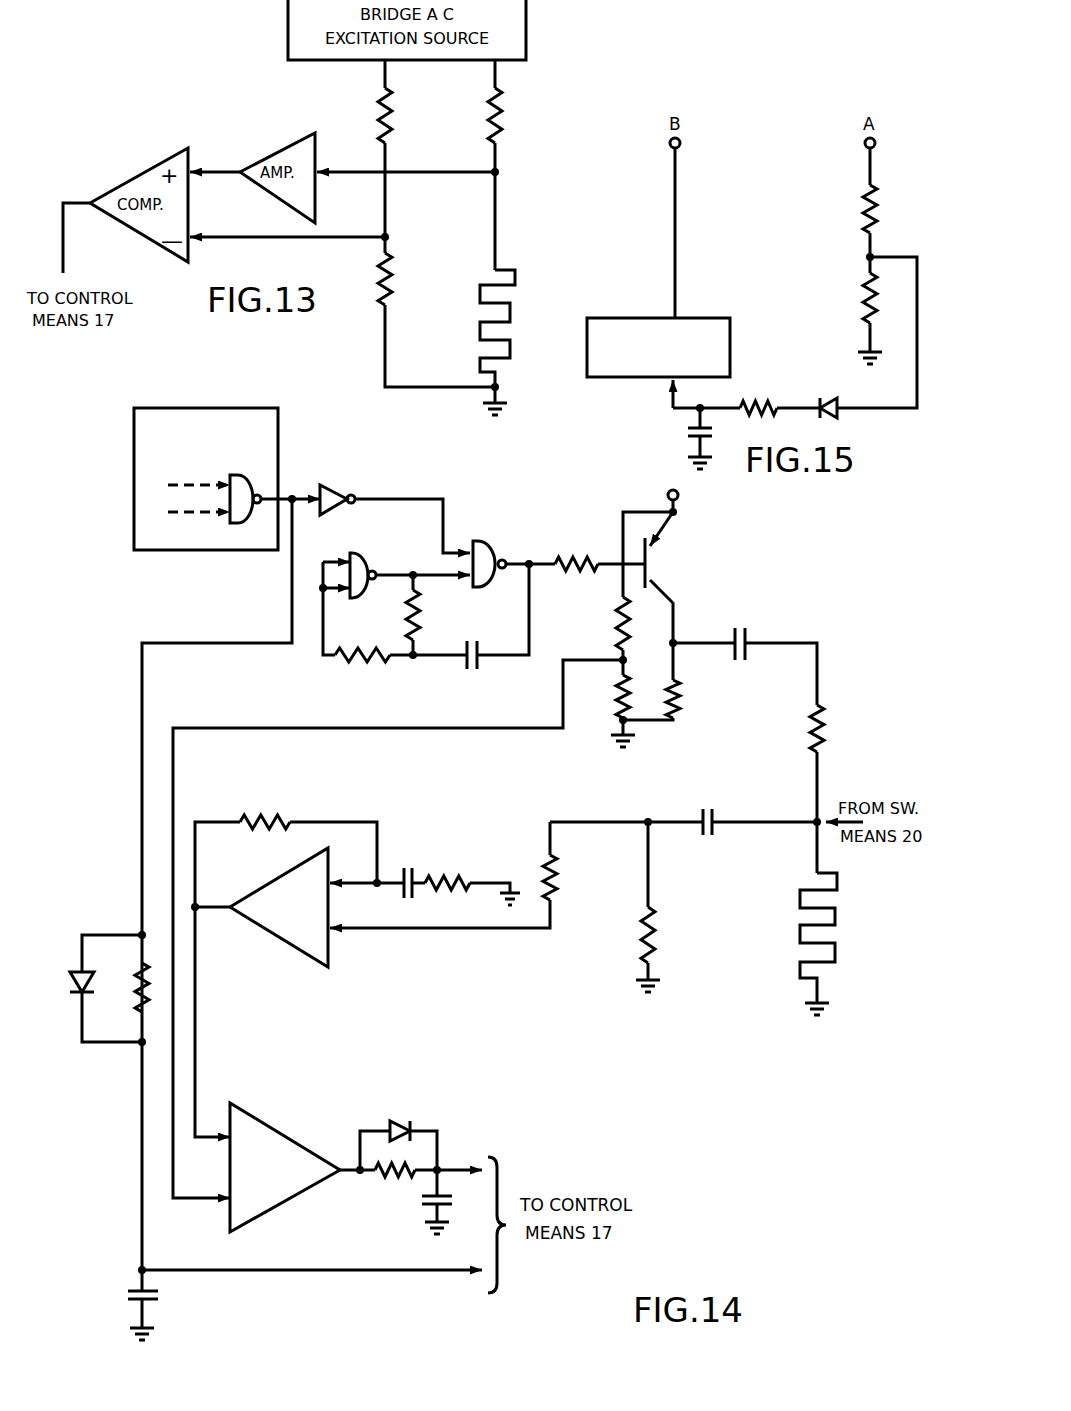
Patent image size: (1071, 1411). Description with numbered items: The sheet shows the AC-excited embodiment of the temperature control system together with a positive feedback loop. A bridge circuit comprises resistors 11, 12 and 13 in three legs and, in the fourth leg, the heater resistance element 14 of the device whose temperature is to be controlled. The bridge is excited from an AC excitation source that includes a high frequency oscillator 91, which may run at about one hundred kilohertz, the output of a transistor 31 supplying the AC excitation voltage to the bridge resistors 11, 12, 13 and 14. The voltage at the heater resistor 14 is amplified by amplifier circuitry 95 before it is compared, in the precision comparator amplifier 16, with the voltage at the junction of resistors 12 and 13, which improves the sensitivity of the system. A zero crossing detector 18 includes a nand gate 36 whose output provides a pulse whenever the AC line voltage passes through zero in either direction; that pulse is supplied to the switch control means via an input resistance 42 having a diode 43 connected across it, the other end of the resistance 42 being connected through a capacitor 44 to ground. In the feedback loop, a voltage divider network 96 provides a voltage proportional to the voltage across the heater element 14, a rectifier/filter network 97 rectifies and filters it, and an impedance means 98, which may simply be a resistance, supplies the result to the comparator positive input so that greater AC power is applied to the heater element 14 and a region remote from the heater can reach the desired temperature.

In FIG. 13, the resistor 11 is at (508, 128).
In FIG. 14, the resistor 11 is at (828, 720).
In FIG. 13, the resistor 12 is at (398, 130).
In FIG. 14, the resistor 12 is at (615, 610).
In FIG. 13, the resistor 13 is at (390, 280).
In FIG. 14, the resistor 13 is at (618, 705).
In FIG. 13, the heater resistance element 14 is at (512, 307).
In FIG. 14, the heater resistance element 14 is at (836, 914).
In FIG. 14, the precision comparator amplifier 16 is at (275, 1128).
In FIG. 14, the zero crossing detector 18 is at (213, 408).
In FIG. 14, the transistor 31 is at (656, 566).
In FIG. 14, the nand gate 36 is at (245, 473).
In FIG. 14, the input resistance 42 is at (150, 1000).
In FIG. 14, the diode 43 is at (68, 980).
In FIG. 14, the capacitor 44 is at (128, 1290).
In FIG. 14, the high frequency oscillator 91 is at (474, 524).
In FIG. 14, the amplifier circuitry 95 is at (272, 886).
In FIG. 15, the voltage divider network 96 is at (838, 301).
In FIG. 15, the rectifier/filter network 97 is at (781, 396).
In FIG. 15, the impedance means 98 is at (700, 318).